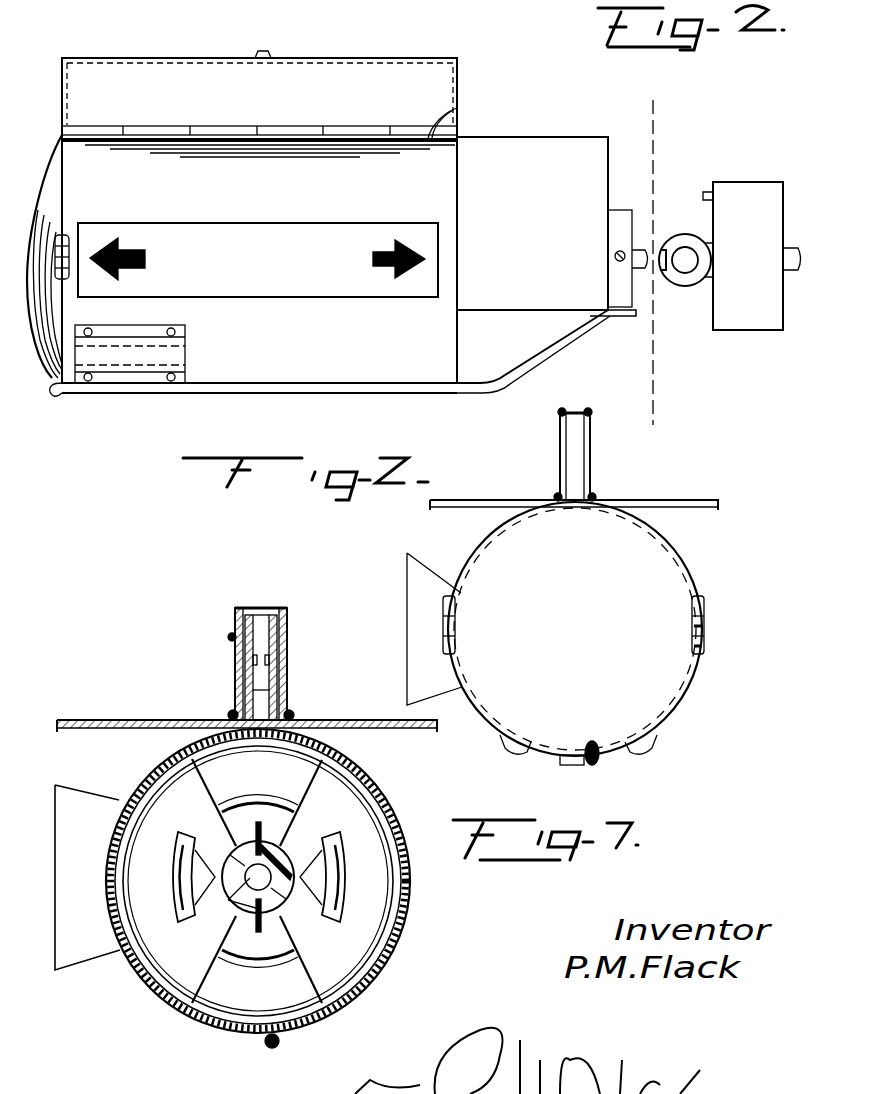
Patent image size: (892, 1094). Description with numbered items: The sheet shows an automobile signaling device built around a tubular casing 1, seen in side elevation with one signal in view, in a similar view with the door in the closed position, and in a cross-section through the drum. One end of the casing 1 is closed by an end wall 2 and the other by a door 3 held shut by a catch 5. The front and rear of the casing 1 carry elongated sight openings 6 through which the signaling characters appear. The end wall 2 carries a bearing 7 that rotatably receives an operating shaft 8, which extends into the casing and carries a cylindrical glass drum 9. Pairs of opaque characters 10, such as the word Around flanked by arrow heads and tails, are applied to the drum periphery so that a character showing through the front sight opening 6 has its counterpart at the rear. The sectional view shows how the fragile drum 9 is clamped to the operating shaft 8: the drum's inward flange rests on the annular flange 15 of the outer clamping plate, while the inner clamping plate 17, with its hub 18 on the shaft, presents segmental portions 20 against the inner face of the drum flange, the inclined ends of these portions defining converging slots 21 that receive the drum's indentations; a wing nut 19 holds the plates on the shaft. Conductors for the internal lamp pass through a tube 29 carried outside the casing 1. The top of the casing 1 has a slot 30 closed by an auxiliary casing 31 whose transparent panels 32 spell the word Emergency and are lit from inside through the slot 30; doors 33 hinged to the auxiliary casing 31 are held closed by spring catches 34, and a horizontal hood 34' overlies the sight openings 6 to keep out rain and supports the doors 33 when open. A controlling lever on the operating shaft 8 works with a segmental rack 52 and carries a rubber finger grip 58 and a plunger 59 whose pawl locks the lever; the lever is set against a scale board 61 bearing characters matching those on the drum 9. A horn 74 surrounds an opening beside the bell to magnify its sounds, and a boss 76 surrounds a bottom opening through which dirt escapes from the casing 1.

In FIG. 2, the tubular casing 1 is at (359, 332).
In FIG. 5, the tubular casing 1 is at (390, 785).
In FIG. 2, the end wall 2 is at (552, 265).
In FIG. 2, the door 3 is at (50, 205).
In FIG. 7, the door 3 is at (575, 629).
In FIG. 2, the catch 5 is at (72, 238).
In FIG. 7, the catch 5 is at (704, 612).
In FIG. 2, the sight openings 6 is at (385, 222).
In FIG. 5, the sight openings 6 is at (408, 845).
In FIG. 2, the bearing 7 is at (622, 218).
In FIG. 2, the operating shaft 8 is at (660, 248).
In FIG. 5, the operating shaft 8 is at (112, 840).
In FIG. 2, the drum 9 is at (412, 285).
In FIG. 5, the drum 9 is at (395, 808).
In FIG. 2, the characters 10 is at (342, 232).
In FIG. 5, the annular flange 15 is at (338, 898).
In FIG. 2, the inner clamping plate 17 is at (650, 116).
In FIG. 7, the inner clamping plate 17 is at (653, 425).
In FIG. 5, the hub 18 is at (305, 995).
In FIG. 5, the wing nut 19 is at (270, 877).
In FIG. 5, the segmental portions 20 is at (178, 855).
In FIG. 5, the slots or spaces 21 is at (210, 772).
In FIG. 2, the tube 29 is at (298, 395).
In FIG. 7, the tube 29 is at (592, 770).
In FIG. 5, the tube 29 is at (276, 1048).
In FIG. 5, the slot 30 is at (258, 730).
In FIG. 2, the auxiliary casing 31 is at (445, 58).
In FIG. 7, the auxiliary casing 31 is at (574, 420).
In FIG. 5, the auxiliary casing 31 is at (262, 615).
In FIG. 5, the transparent panels 32 is at (252, 690).
In FIG. 2, the doors 33 is at (333, 68).
In FIG. 7, the doors 33 is at (560, 450).
In FIG. 5, the doors 33 is at (235, 667).
In FIG. 2, the spring catches 34 is at (281, 41).
In FIG. 7, the spring catches 34 is at (567, 410).
In FIG. 5, the spring catches 34 is at (257, 651).
In FIG. 2, the hood 34' is at (470, 113).
In FIG. 7, the hood 34' is at (586, 489).
In FIG. 5, the hood 34' is at (247, 705).
In FIG. 2, the segmental rack 52 is at (706, 190).
In FIG. 2, the finger grip 58 is at (692, 282).
In FIG. 2, the plunger 59 is at (686, 250).
In FIG. 2, the scale board 61 is at (745, 205).
In FIG. 7, the horn 74 is at (424, 566).
In FIG. 5, the horn 74 is at (88, 946).
In FIG. 7, the boss 76 is at (571, 765).